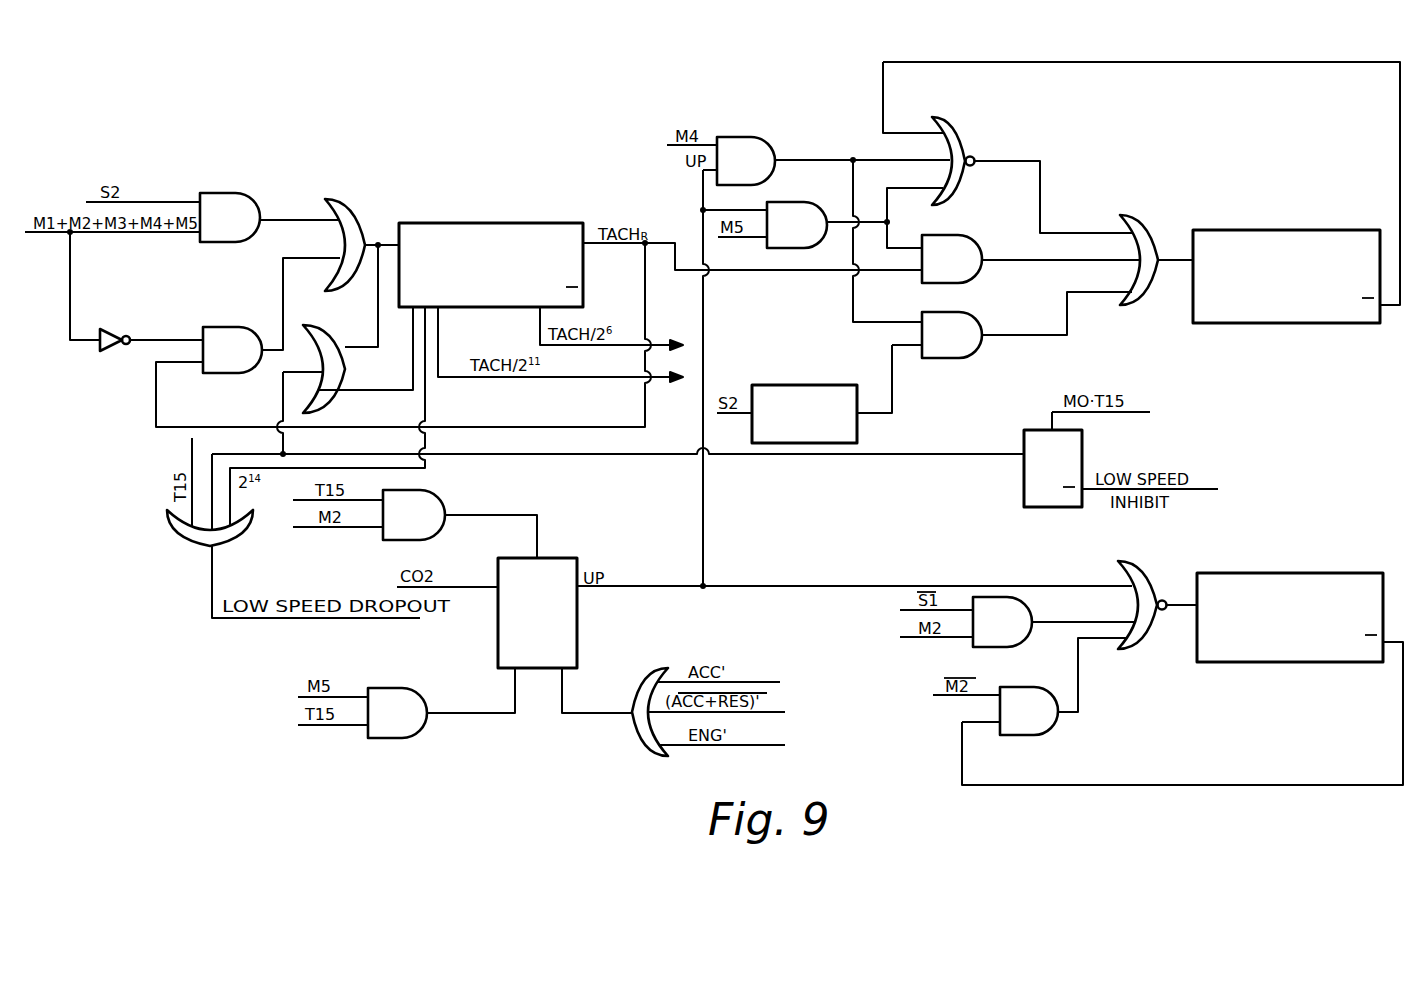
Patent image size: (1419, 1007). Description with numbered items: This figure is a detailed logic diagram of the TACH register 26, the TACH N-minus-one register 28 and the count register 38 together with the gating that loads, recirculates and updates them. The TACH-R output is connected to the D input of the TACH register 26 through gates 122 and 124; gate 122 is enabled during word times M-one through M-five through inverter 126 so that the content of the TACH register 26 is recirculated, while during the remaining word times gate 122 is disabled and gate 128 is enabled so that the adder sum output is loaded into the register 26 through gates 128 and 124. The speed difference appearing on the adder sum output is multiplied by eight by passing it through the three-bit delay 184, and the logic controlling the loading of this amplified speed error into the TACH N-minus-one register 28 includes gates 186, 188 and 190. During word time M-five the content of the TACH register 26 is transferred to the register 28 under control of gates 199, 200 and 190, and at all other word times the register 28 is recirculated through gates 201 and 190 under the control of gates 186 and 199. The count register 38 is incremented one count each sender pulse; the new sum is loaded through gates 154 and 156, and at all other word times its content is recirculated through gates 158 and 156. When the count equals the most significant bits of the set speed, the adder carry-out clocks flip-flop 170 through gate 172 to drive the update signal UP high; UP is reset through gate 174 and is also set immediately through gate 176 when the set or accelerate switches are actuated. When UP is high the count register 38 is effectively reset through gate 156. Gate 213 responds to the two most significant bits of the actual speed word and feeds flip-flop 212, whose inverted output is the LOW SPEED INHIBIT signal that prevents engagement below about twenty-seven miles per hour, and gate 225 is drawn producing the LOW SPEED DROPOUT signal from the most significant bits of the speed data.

The gate 128 is at (231, 203).
The gate 124 is at (348, 226).
The TACH register 26 is at (503, 232).
The gate 122 is at (222, 334).
The gate 213 is at (322, 352).
The inverter 126 is at (108, 356).
The OR gate 225 is at (200, 533).
The gate 172 is at (425, 508).
The flip-flop 170 is at (558, 563).
The gate 174 is at (398, 697).
The gate 176 is at (650, 687).
The gate 186 is at (742, 148).
The gate 199 is at (780, 214).
The gate 201 is at (947, 134).
The gate 200 is at (947, 244).
The gate 190 is at (1140, 235).
The TACH N-1 register 28 is at (1283, 243).
The gate 188 is at (955, 324).
The 3 bit delay 184 is at (803, 390).
The flip-flop 212 is at (1038, 478).
The gate 156 is at (1140, 580).
The gate 154 is at (1007, 623).
The gate 158 is at (1023, 718).
The count register 38 is at (1305, 648).